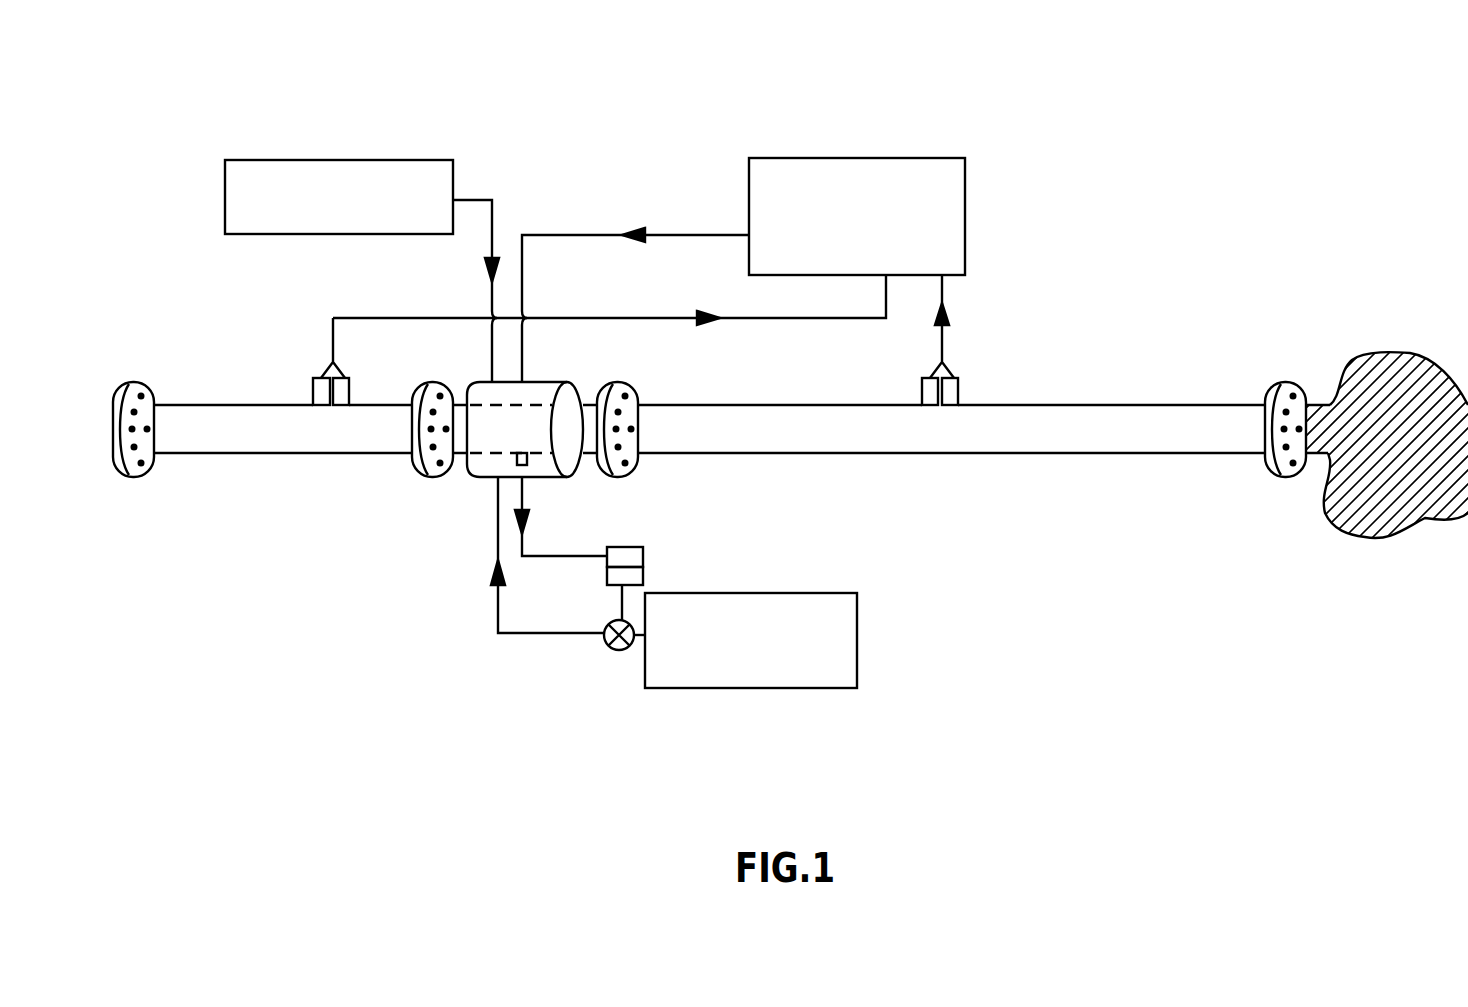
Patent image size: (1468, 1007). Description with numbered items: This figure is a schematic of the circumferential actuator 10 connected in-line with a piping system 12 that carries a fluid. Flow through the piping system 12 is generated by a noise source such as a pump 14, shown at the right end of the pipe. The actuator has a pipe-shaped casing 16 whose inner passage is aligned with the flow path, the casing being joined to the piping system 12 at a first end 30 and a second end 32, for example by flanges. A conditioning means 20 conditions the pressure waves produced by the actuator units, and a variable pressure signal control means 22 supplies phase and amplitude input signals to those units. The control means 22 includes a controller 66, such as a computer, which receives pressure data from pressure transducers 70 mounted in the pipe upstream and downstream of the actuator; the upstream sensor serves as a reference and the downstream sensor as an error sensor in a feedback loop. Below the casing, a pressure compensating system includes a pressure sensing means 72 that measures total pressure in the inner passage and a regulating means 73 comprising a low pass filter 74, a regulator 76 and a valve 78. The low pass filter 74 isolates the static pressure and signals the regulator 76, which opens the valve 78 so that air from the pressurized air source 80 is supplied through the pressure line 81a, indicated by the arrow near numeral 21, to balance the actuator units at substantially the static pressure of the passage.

The circumferential actuator 10 is at (455, 520).
The piping system 12 is at (1048, 453).
The pump 14 is at (1358, 533).
The casing 16 is at (547, 380).
The conditioning means 20 is at (375, 160).
The pneumatic supply line 21 is at (487, 706).
The variable pressure signal control means 22 is at (878, 108).
The first end 30 is at (622, 380).
The second end 32 is at (435, 380).
The controller 66 is at (968, 192).
The pressure transducer 70 is at (298, 355).
The pressure sensing means 72 is at (527, 465).
The regulating means 73 is at (612, 705).
The low pass filter 74 is at (643, 547).
The regulator 76 is at (643, 572).
The valve 78 is at (605, 645).
The pressurized air source 80 is at (857, 662).
The pressure line 81a is at (495, 612).